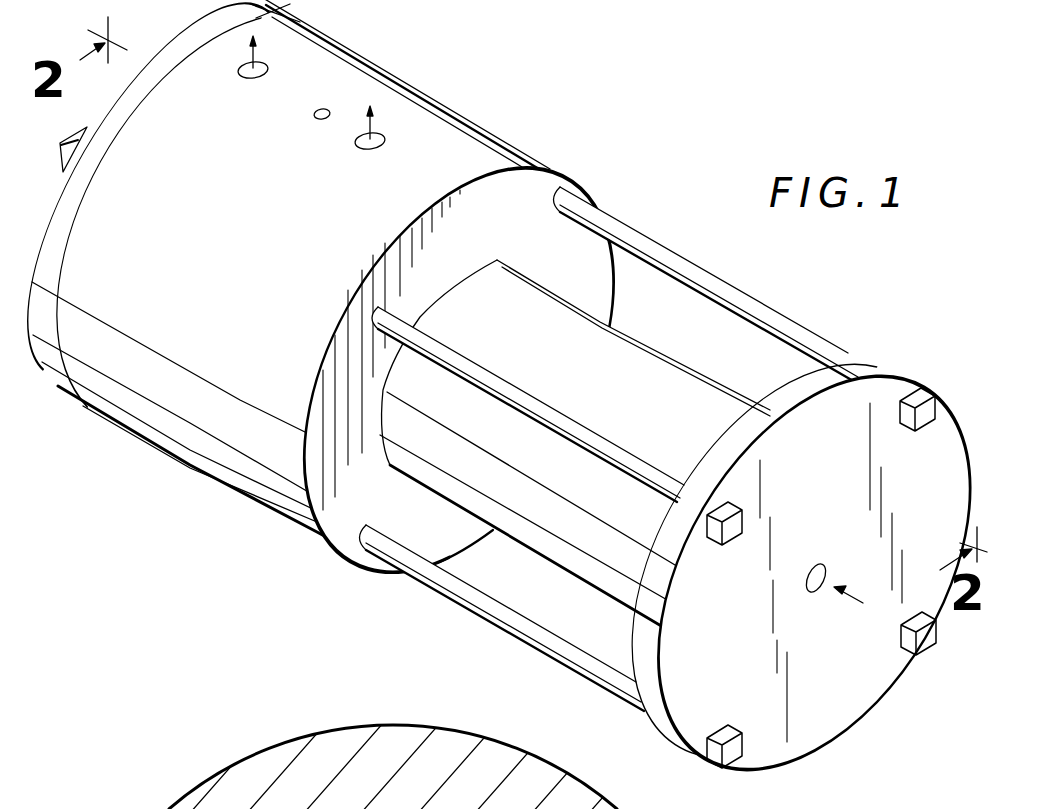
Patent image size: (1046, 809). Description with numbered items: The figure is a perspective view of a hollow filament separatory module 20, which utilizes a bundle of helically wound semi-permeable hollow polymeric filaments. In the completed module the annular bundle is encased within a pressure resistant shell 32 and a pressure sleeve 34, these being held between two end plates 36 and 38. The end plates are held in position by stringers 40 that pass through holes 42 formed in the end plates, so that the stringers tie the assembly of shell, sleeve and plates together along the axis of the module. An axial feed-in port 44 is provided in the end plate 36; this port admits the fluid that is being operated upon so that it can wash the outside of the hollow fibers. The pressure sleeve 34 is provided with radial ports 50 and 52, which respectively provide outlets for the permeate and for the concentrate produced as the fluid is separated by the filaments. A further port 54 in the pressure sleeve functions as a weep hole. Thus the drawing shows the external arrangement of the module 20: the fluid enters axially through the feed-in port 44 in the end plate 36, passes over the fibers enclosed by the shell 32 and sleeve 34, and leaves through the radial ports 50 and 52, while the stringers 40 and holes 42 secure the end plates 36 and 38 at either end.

The module 20 is at (517, 404).
The pressure resistant shell 32 is at (656, 401).
The pressure sleeve 34 is at (250, 265).
The end plate 36 is at (883, 364).
The end plate 38 is at (286, 8).
The stringers 40 is at (643, 240).
The holes 42 is at (712, 546).
The axial feed-in port 44 is at (824, 570).
The radial port 50 is at (241, 74).
The radial port 52 is at (363, 149).
The port 54 is at (312, 116).